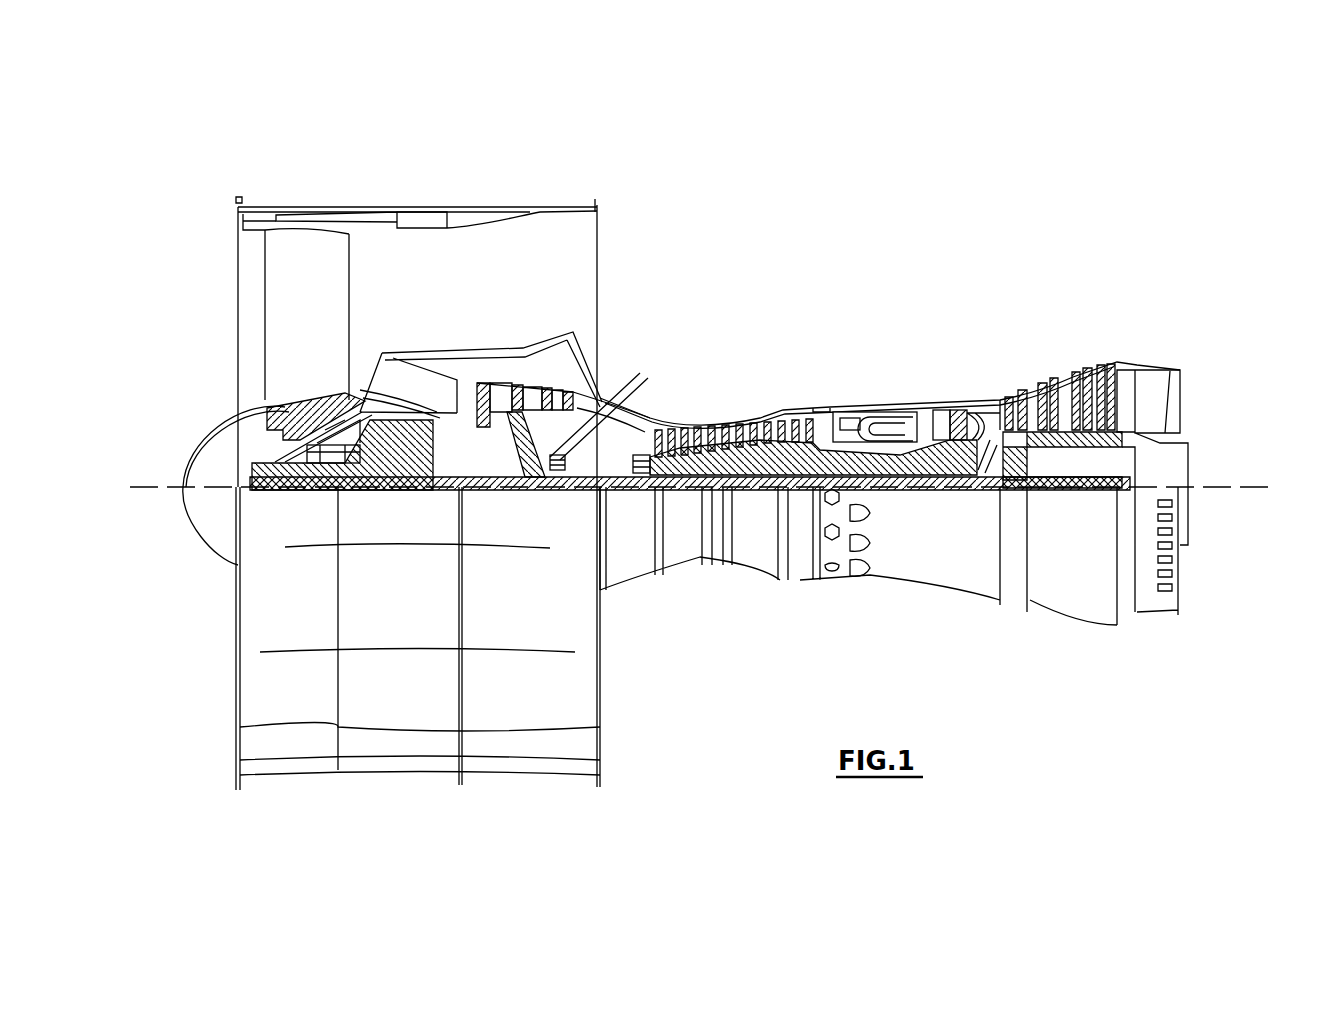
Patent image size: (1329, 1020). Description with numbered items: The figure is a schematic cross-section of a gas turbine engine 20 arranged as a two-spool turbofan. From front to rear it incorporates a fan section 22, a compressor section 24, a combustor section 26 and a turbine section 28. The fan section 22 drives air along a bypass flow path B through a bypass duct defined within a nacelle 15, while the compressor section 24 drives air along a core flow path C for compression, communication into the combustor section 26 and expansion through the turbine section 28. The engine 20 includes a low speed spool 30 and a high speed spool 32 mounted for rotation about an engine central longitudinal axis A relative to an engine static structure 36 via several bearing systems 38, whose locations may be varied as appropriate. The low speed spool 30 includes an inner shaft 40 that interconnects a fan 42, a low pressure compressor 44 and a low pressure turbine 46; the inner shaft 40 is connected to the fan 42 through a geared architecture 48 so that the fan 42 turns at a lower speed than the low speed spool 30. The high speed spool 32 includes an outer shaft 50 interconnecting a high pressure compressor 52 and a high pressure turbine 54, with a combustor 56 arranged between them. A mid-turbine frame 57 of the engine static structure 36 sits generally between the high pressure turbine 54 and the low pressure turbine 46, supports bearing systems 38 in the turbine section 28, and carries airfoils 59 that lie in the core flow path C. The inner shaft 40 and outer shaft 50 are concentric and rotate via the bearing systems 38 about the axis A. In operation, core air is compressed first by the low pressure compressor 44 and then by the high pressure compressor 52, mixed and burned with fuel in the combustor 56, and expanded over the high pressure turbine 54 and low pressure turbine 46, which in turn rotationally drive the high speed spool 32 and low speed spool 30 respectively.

The gas turbine engine 20 is at (878, 259).
The fan section 22 is at (350, 200).
The nacelle 15 is at (418, 205).
The fan 42 is at (324, 334).
The bypass flow path B is at (385, 278).
The core flow path C is at (428, 390).
The geared architecture 48 is at (425, 470).
The low pressure compressor 44 is at (535, 395).
The bearing systems 38 is at (553, 470).
The inner shaft 40 is at (615, 490).
The compressor section 24 is at (648, 398).
The high pressure compressor 52 is at (747, 398).
The high speed spool 32 is at (795, 450).
The combustor section 26 is at (872, 398).
The combustor 56 is at (873, 430).
The high pressure turbine 54 is at (938, 410).
The mid-turbine frame 57 is at (980, 398).
The outer shaft 50 is at (883, 470).
The turbine section 28 is at (1018, 352).
The low pressure turbine 46 is at (1068, 375).
The airfoils 59 is at (997, 447).
The low speed spool 30 is at (757, 492).
The engine static structure 36 is at (798, 577).
The engine central longitudinal axis A is at (1270, 487).